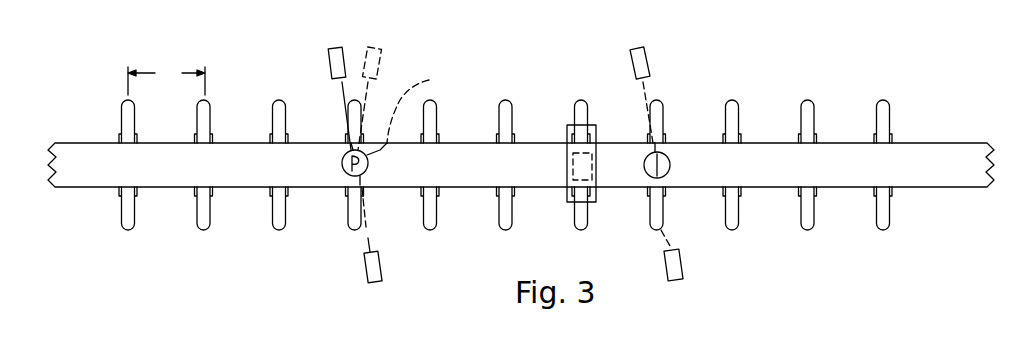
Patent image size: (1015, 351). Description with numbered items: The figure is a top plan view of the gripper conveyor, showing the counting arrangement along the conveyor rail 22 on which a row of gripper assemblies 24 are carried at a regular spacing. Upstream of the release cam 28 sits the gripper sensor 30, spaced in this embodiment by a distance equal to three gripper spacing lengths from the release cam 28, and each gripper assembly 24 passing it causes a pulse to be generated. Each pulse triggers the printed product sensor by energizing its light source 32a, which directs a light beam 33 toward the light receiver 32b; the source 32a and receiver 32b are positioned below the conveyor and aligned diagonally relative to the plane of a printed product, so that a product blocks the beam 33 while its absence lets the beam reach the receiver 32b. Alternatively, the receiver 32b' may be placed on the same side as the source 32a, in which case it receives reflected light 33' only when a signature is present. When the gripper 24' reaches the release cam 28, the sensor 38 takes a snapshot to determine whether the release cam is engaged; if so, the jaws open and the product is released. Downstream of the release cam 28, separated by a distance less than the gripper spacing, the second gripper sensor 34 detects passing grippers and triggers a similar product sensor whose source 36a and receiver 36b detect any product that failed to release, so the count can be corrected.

The support bar 22 is at (97, 187).
The gripper assembly 24 is at (505, 164).
The gripper 24' is at (336, 225).
The release cam 28 is at (595, 125).
The gripper sensor 30 is at (344, 171).
The light source 32a is at (365, 270).
The light receiver 32b is at (299, 87).
The receiver 32b' is at (419, 81).
The light beam 33 is at (402, 227).
The alternate light beam 33' is at (411, 109).
The second gripper sensor 34 is at (646, 170).
The emitter 36a is at (682, 268).
The emitter 36b is at (650, 70).
The sensor 38 is at (572, 170).